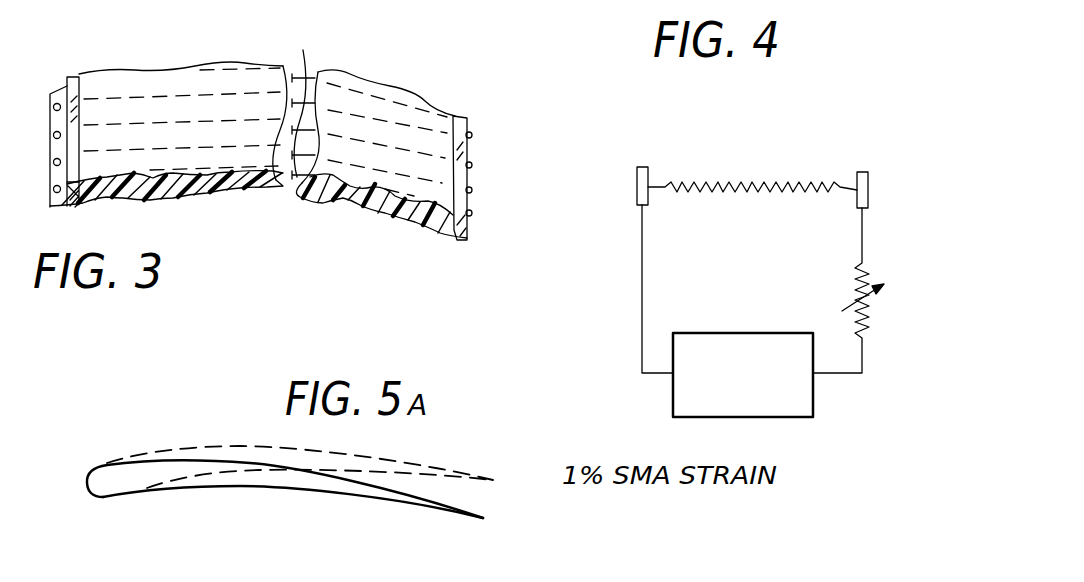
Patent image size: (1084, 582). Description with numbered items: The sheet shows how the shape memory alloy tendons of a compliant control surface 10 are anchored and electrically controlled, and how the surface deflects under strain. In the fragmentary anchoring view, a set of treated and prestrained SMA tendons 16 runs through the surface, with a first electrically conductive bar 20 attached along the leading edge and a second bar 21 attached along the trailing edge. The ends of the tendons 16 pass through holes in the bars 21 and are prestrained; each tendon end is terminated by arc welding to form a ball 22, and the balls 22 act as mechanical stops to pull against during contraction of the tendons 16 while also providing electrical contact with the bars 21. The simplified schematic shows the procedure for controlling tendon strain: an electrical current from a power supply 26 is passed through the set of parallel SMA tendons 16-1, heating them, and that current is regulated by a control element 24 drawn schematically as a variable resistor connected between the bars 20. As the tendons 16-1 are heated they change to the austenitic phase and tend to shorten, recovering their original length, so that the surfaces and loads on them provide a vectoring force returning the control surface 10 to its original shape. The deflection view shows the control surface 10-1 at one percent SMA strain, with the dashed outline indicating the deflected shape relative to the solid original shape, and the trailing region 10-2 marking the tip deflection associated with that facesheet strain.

In FIG. 5A, the control surface 10 is at (317, 490).
In FIG. 5A, the control surface 10-1 is at (492, 482).
In FIG. 5A, the airfoil lower surface / trailing edge 10-2 is at (452, 512).
In FIG. 3, the SMA tendons 16 is at (188, 95).
In FIG. 4, the parallel SMA tendons 16-1 is at (733, 183).
In FIG. 3, the first electrically conductive bar 20 is at (70, 77).
In FIG. 4, the first electrically conductive bar 20 is at (648, 171).
In FIG. 3, the second bar 21 is at (463, 118).
In FIG. 3, the ball 22 is at (49, 160).
In FIG. 4, the control element 24 is at (855, 288).
In FIG. 4, the power supply 26 is at (726, 342).